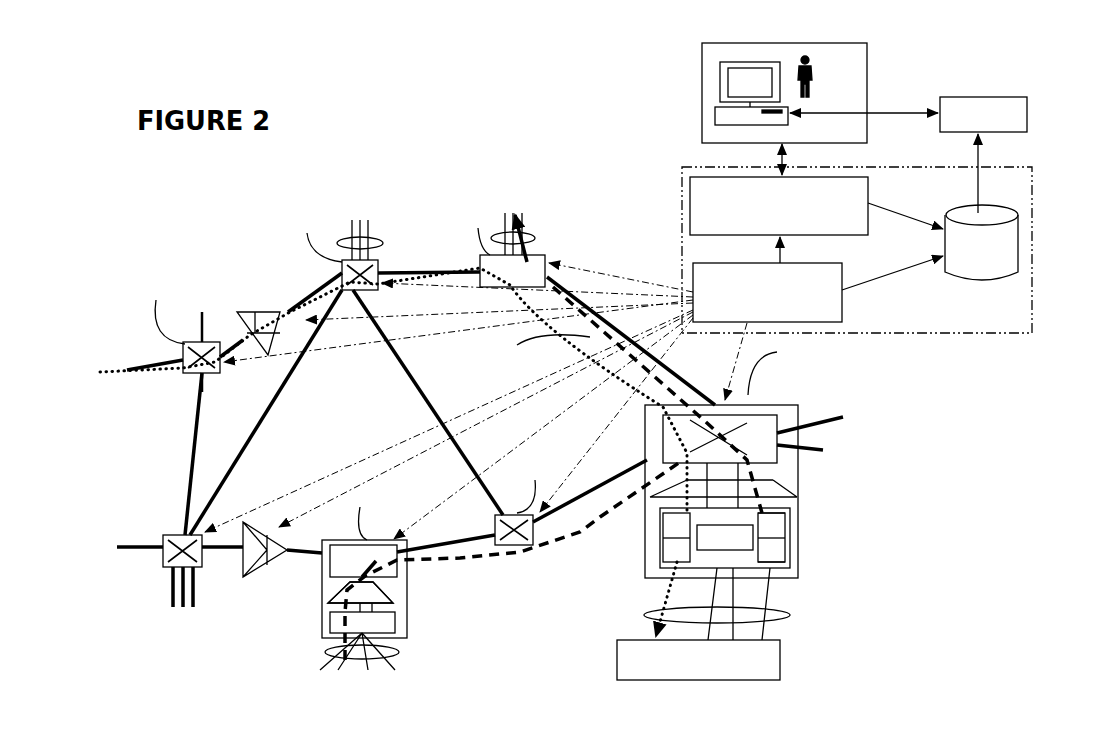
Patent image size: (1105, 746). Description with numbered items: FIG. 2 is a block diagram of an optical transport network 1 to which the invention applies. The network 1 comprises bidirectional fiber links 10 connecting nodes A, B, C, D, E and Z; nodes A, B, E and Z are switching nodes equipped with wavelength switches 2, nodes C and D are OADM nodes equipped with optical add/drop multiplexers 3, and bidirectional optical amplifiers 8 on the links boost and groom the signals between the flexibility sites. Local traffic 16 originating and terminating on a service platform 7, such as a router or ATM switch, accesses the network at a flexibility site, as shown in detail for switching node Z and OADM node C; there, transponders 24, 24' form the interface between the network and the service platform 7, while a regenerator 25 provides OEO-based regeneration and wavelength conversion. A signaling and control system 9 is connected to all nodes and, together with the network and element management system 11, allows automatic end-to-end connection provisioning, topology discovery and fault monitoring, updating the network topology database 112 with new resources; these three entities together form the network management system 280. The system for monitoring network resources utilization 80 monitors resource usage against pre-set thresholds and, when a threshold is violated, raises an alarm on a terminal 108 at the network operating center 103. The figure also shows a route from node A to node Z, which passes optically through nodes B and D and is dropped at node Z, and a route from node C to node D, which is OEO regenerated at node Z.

The optical transport network 1 is at (255, 221).
The wavelength switch 2 is at (810, 402).
The optical add/drop multiplexer 3 is at (392, 538).
The service platform 7 is at (780, 660).
The bidirectional optical amplifier 8 is at (255, 310).
The signaling and control system 9 is at (845, 317).
The bidirectional fiber link 10 is at (450, 267).
The network and element management system 11 is at (690, 192).
The local traffic 16 is at (325, 650).
The transponder 24 is at (648, 543).
The transponder 24' is at (800, 574).
The regenerator 25 is at (727, 547).
The system for monitoring network resources utilization 80 is at (1028, 108).
The network operating center 103 is at (702, 88).
The terminal 108 is at (743, 62).
The network topology database 112 is at (1020, 240).
The network management system 280 is at (960, 337).